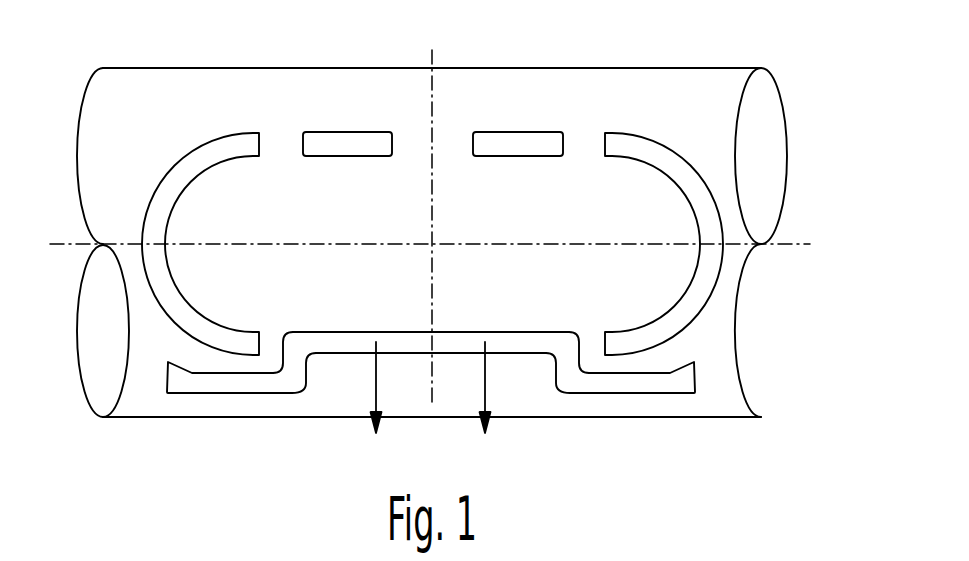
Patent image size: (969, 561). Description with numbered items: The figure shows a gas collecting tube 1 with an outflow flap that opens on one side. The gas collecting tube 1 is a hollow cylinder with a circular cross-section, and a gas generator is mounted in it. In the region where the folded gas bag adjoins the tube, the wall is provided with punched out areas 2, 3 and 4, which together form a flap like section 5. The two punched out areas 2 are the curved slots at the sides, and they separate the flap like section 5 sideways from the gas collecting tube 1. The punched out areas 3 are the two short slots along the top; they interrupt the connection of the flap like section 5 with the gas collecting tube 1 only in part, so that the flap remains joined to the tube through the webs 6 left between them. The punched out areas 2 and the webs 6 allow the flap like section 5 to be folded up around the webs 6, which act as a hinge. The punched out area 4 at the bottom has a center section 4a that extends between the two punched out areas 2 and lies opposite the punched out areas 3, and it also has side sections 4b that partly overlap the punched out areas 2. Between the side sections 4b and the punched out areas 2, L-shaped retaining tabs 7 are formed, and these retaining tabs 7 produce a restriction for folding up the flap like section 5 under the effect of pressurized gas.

The gas collecting tube 1 is at (725, 105).
The punched out areas 2 is at (215, 148).
The punched out areas 3 is at (348, 142).
The punched out area 4 is at (404, 409).
The center section 4a is at (522, 345).
The side sections 4b is at (220, 385).
The flap like section 5 is at (637, 217).
The webs 6 is at (283, 147).
The retaining tabs 7 is at (272, 345).